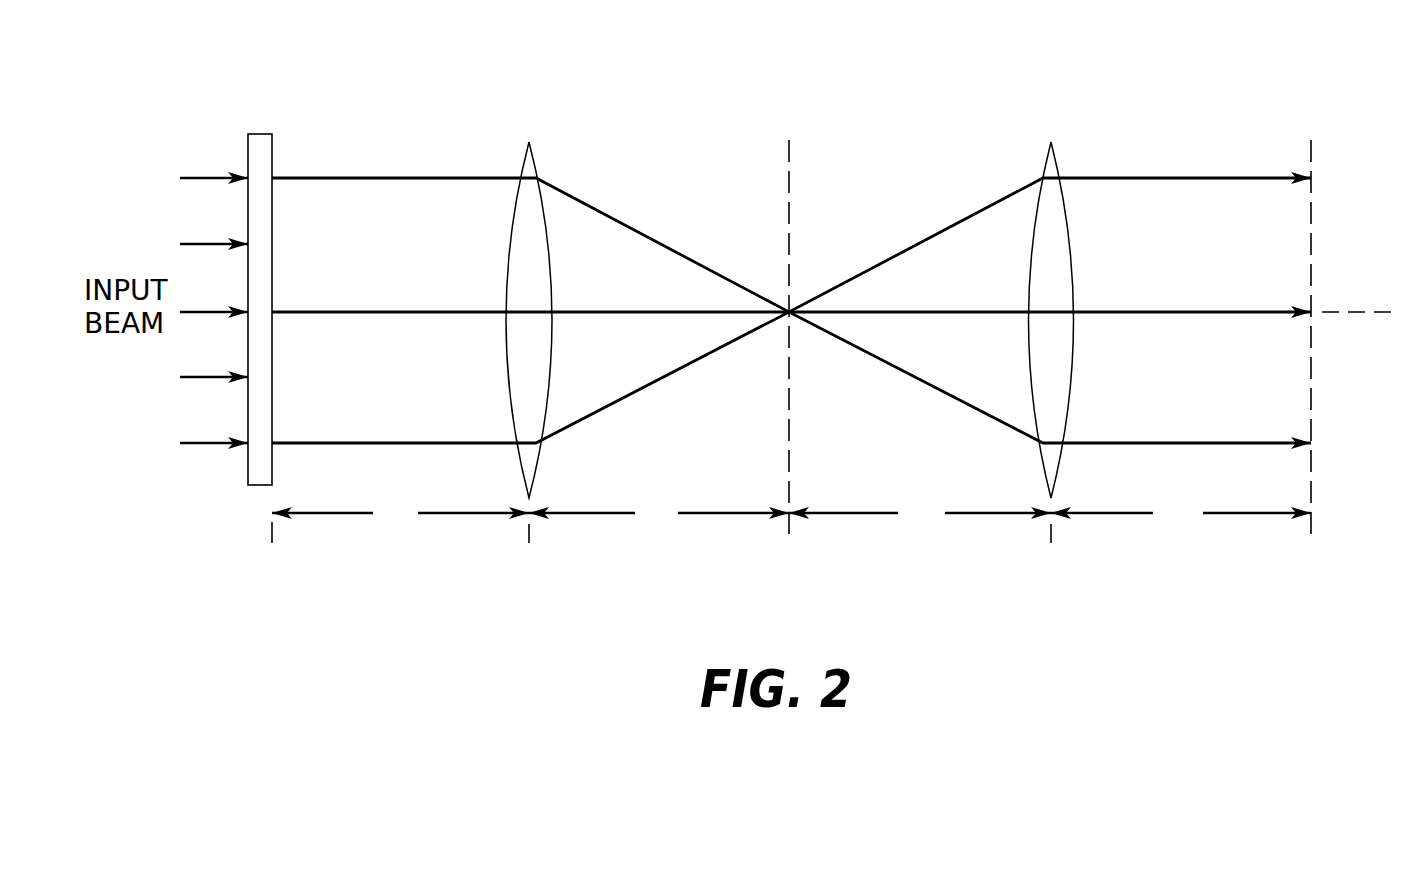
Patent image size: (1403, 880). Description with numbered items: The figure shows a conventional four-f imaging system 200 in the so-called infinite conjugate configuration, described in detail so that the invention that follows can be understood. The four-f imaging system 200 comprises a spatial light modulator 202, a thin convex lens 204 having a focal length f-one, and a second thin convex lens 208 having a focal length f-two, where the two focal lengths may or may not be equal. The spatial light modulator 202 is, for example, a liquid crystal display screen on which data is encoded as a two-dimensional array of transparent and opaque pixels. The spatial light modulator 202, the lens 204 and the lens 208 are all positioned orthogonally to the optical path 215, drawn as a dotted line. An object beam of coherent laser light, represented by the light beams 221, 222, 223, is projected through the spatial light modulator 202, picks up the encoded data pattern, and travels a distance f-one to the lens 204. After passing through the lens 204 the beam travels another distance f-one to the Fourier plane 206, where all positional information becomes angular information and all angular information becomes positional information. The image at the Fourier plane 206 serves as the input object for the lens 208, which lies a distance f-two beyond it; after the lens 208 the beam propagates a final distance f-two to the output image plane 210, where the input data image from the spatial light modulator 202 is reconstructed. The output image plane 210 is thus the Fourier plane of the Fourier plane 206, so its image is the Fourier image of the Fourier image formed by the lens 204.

The 4-f imaging system 200 is at (502, 585).
The spatial light modulator 202 is at (258, 133).
The thin convex lens 204 is at (529, 140).
The Fourier plane 206 is at (789, 137).
The thin convex lens 208 is at (1051, 140).
The output image plane 210 is at (1311, 137).
The optical path 215 is at (1370, 308).
The light beam 221 is at (372, 176).
The light beam 222 is at (372, 310).
The light beam 223 is at (372, 441).